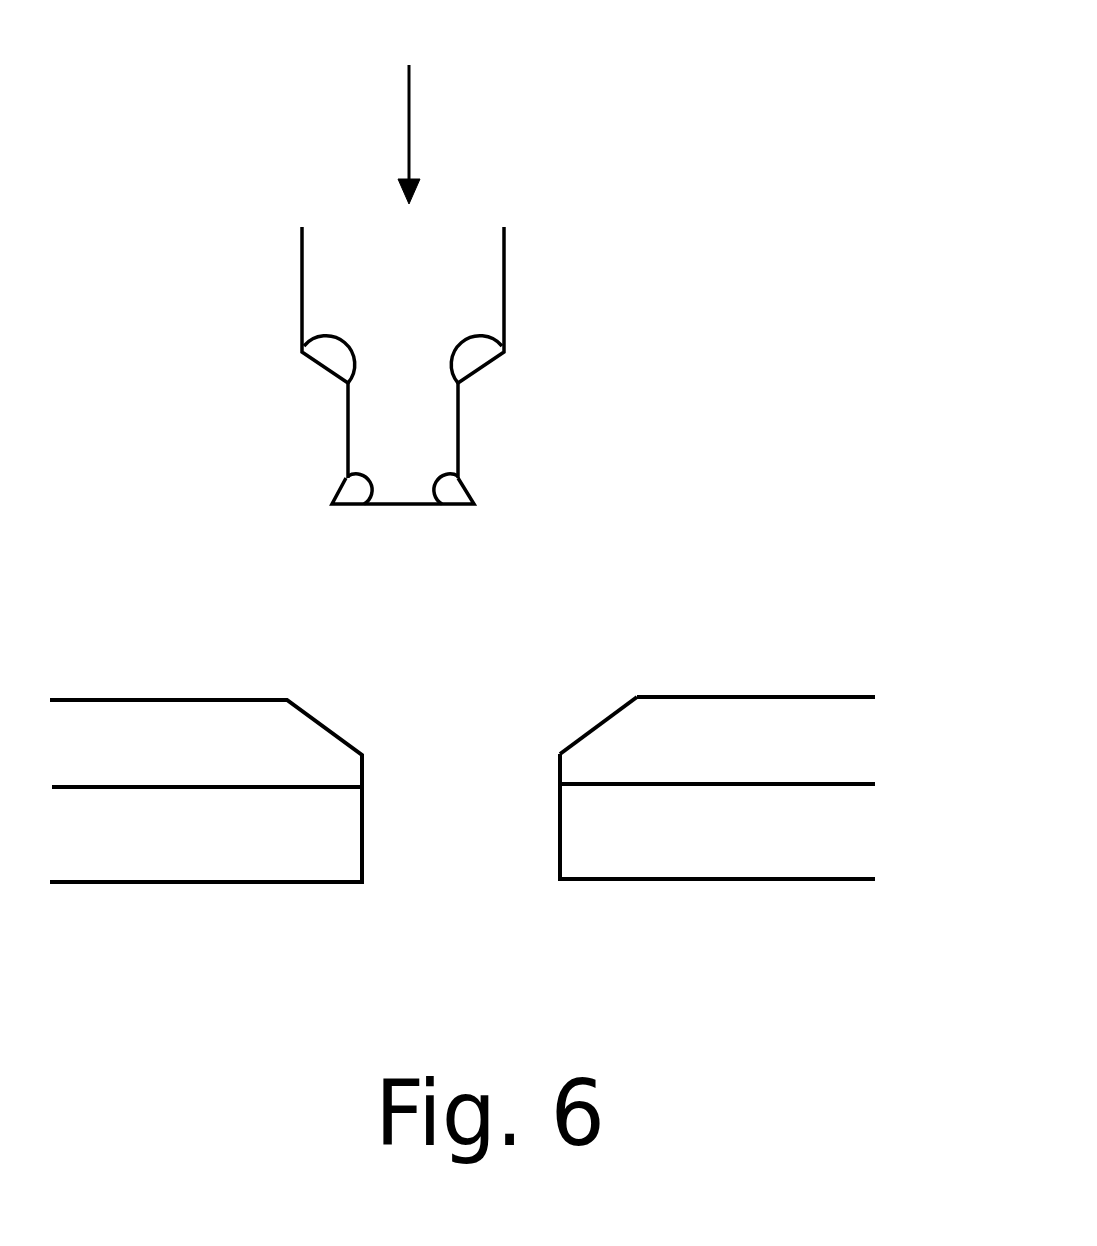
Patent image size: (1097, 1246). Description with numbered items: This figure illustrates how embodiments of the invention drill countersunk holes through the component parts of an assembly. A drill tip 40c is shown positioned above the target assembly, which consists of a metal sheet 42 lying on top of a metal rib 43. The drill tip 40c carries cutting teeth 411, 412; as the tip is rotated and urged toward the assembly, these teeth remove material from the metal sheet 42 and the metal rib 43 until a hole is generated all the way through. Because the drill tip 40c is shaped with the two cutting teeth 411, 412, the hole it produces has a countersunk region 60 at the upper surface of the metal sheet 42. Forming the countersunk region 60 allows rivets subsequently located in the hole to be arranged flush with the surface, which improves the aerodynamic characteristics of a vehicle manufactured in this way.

The drill tip 40c is at (479, 383).
The cutting tooth 411 is at (472, 355).
The cutting tooth 412 is at (450, 493).
The metal sheet 42 is at (836, 771).
The metal rib 43 is at (836, 856).
The countersunk region 60 is at (580, 715).